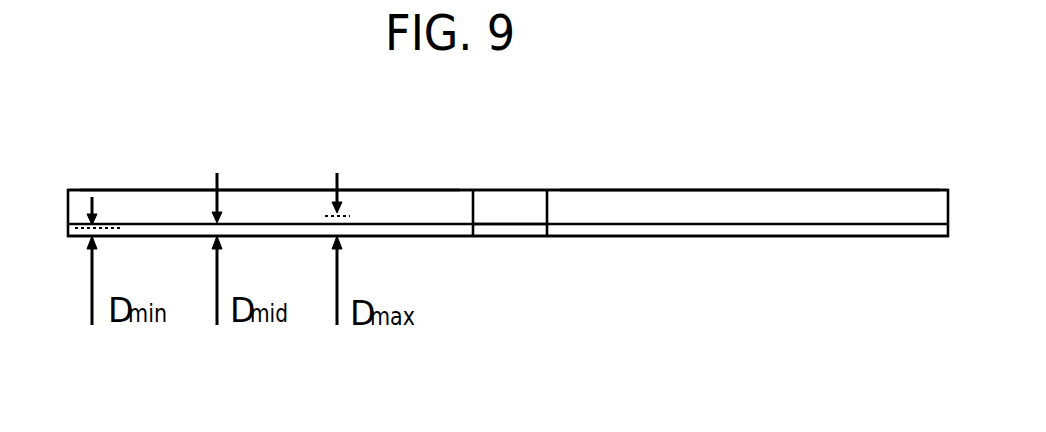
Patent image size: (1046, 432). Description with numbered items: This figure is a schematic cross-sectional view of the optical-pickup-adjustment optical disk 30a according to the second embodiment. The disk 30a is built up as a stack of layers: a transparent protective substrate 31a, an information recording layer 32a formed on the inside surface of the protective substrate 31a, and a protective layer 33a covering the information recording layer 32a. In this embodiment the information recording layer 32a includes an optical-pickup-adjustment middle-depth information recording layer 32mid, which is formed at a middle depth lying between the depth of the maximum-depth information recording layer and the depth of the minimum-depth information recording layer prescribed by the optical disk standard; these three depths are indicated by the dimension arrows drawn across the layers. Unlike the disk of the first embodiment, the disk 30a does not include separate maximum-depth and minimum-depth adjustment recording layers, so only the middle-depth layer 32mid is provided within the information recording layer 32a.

The optical-pickup-adjustment optical disk 30a is at (588, 327).
The transparent protective substrate 31a is at (628, 230).
The information recording layer 32a is at (452, 223).
The protective layer 33a is at (402, 205).
The optical-pickup-adjustment middle-depth information recording layer 32mid is at (472, 178).